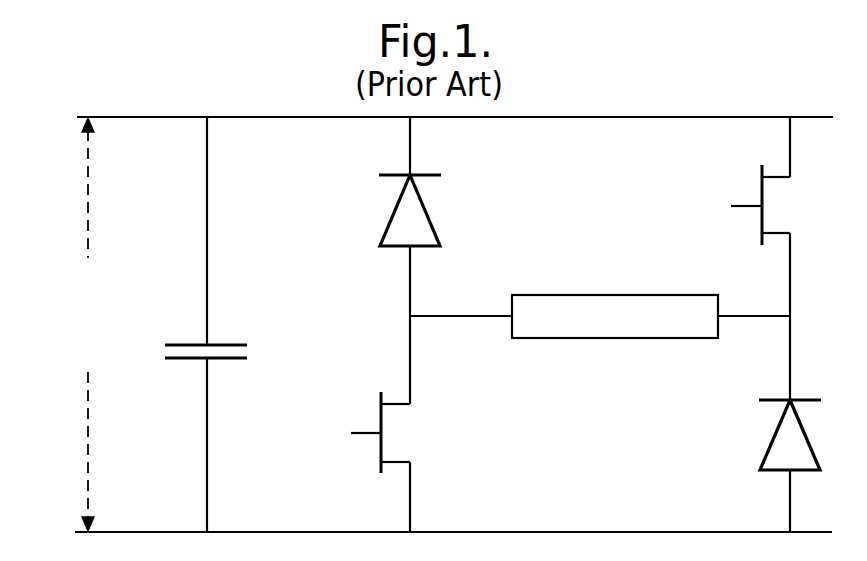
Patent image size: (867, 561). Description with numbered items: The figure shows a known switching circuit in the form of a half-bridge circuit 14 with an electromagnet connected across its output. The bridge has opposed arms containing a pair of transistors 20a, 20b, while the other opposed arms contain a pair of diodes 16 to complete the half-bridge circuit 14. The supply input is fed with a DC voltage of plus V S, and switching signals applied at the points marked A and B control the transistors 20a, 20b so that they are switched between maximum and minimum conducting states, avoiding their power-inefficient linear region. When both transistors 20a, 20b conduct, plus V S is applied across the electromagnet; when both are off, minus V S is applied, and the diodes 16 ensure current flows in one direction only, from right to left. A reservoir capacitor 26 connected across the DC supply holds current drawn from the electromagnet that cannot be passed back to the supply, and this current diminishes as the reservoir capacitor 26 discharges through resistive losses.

The half-bridge circuit 14 is at (630, 106).
The diodes 16 is at (425, 208).
The transistor 20a is at (762, 180).
The transistor 20b is at (381, 447).
The reservoir capacitor 26 is at (230, 360).